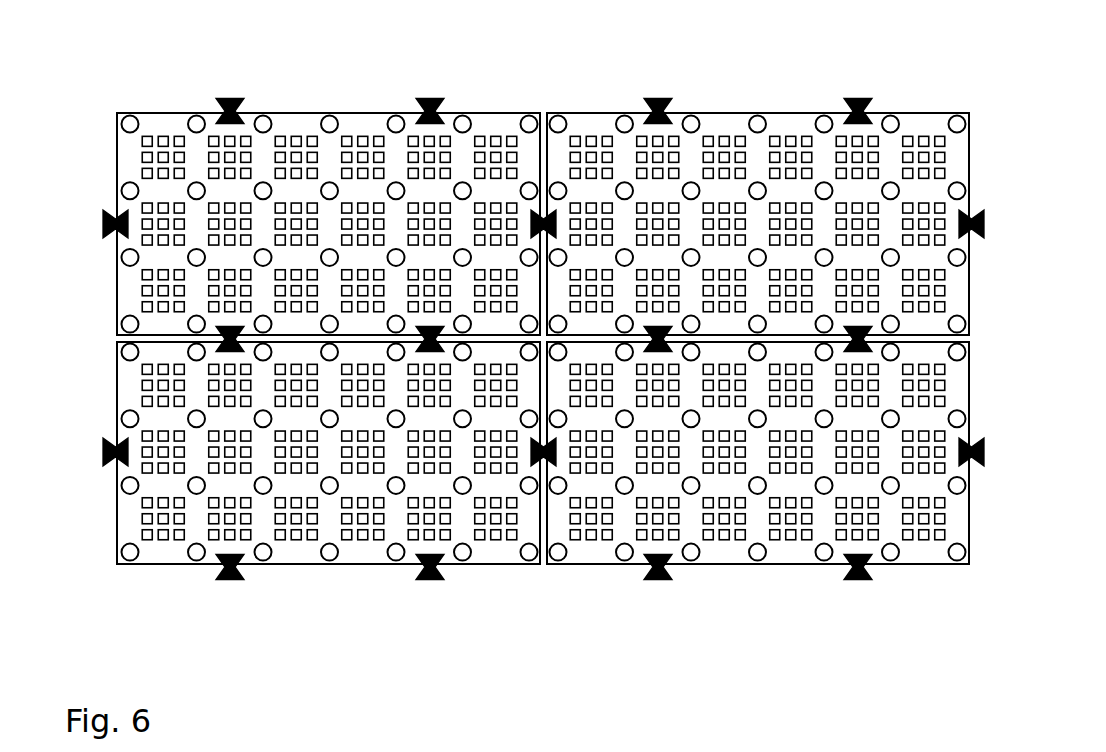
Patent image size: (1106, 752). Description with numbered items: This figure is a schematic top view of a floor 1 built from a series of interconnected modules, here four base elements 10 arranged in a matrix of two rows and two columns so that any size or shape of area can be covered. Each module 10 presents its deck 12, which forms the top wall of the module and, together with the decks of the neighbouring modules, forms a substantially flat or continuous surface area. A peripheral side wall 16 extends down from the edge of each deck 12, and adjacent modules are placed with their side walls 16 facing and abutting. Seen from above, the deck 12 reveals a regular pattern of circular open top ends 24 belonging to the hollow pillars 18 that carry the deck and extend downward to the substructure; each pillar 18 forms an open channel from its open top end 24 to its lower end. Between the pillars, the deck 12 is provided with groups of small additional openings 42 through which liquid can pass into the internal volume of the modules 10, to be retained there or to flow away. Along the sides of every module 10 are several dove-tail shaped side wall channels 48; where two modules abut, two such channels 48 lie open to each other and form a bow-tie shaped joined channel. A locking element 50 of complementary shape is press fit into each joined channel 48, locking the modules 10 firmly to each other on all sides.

The floor 1 is at (561, 339).
The base element 10 is at (542, 339).
The deck 12 is at (496, 124).
The peripheral side wall 16 is at (160, 333).
The pillar 18 is at (969, 183).
The open top end 24 is at (957, 124).
The opening 42 is at (723, 534).
The side wall channel 48 is at (842, 148).
The locking element 50 is at (855, 143).